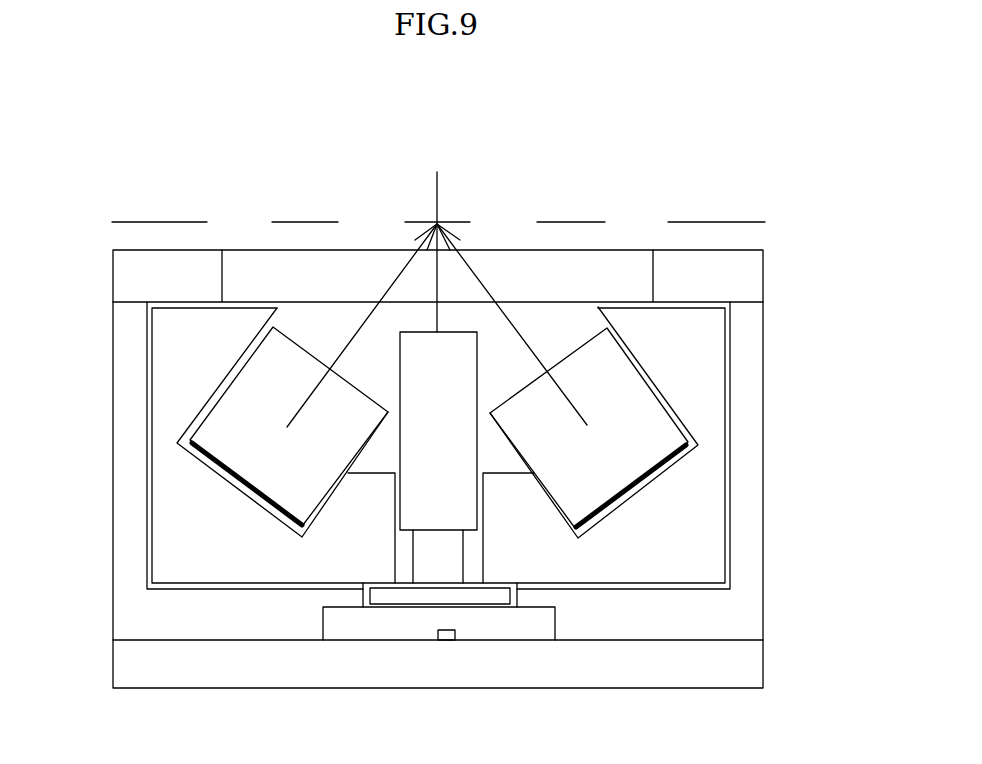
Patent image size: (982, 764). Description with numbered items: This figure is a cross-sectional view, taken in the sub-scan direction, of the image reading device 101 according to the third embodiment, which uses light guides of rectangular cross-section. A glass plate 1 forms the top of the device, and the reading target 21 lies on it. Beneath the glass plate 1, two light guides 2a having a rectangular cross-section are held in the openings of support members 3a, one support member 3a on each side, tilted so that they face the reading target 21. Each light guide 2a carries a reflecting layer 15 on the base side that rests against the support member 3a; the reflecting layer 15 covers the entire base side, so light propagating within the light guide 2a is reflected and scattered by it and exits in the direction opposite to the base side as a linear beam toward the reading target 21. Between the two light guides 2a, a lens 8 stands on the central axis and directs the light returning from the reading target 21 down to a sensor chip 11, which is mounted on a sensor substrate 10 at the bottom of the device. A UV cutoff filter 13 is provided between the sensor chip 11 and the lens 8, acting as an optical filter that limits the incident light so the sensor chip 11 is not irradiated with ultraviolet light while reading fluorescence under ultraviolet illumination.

The image reading device 101 is at (135, 160).
The glass plate 1 is at (625, 275).
The light guide 2a is at (277, 403).
The support member 3a is at (707, 458).
The lens 8 is at (442, 377).
The reading target 21 is at (458, 221).
The reflecting layer 15 is at (250, 480).
The UV cutoff filter 13 is at (442, 597).
The sensor substrate 10 is at (715, 672).
The sensor chip 11 is at (455, 636).